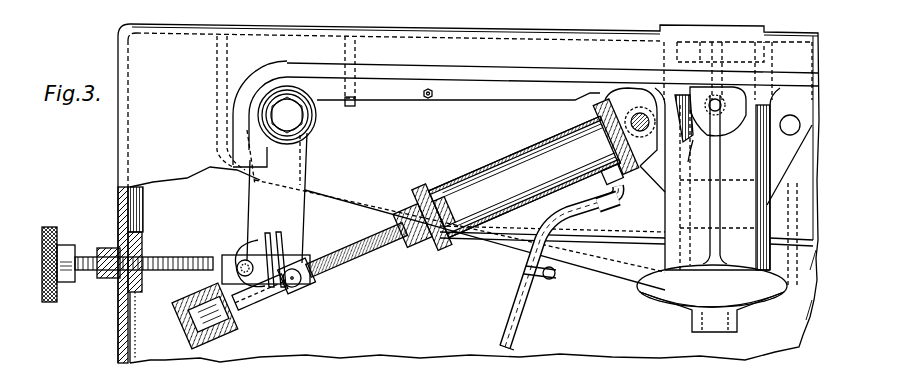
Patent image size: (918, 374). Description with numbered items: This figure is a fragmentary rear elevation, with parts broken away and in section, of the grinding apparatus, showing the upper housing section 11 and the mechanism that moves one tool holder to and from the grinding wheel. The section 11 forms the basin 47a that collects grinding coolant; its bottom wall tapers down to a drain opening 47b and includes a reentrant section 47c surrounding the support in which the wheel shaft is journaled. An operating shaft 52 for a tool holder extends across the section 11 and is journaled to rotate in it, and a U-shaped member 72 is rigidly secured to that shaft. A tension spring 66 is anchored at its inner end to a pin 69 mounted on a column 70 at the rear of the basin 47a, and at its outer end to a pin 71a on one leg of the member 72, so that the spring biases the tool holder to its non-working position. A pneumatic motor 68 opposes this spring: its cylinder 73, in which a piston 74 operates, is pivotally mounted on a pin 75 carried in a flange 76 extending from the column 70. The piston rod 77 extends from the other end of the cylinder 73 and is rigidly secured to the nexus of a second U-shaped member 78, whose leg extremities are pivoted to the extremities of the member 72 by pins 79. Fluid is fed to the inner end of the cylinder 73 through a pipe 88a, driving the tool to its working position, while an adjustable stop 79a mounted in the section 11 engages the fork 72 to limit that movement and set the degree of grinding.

The upper housing section 11 is at (118, 170).
The basin 47a is at (237, 45).
The drain opening 47b is at (686, 314).
The reentrant section 47c is at (632, 247).
The operating shaft 52 is at (297, 122).
The tension spring 66 is at (268, 255).
The pneumatic motor 68 is at (480, 163).
The pin 69 is at (723, 108).
The column 70 is at (655, 256).
The pin 71a is at (240, 257).
The U-shaped member 72 is at (252, 194).
The cylinder 73 is at (507, 152).
The piston 74 is at (430, 188).
The pin 75 is at (648, 112).
The flange 76 is at (782, 173).
The piston rod 77 is at (338, 262).
The second U-shaped member 78 is at (231, 314).
The pin 79 is at (297, 289).
The adjustable stop 79a is at (173, 258).
The pipe 88a is at (533, 326).